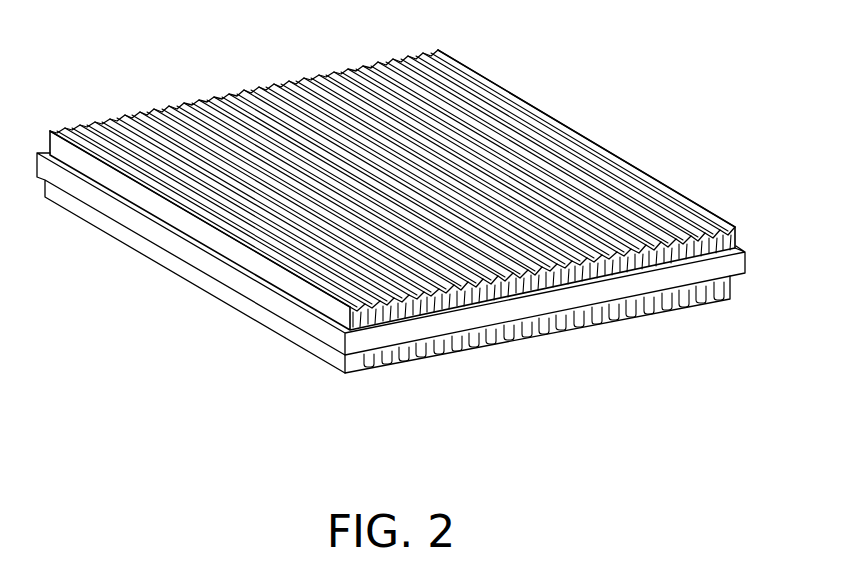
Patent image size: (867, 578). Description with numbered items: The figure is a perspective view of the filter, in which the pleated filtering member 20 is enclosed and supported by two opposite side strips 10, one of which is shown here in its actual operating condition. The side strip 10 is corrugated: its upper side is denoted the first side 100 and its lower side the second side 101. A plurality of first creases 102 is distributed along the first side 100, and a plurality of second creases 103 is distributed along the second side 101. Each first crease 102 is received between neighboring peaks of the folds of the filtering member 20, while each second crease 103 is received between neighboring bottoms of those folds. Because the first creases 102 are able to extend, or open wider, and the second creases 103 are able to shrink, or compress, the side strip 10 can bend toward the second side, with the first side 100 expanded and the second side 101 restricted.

The first side 100 is at (351, 305).
The filtering member 20 is at (487, 100).
The side strip 10 is at (522, 329).
The second side 101 is at (355, 373).
The first creases 102 is at (713, 222).
The second creases 103 is at (707, 297).